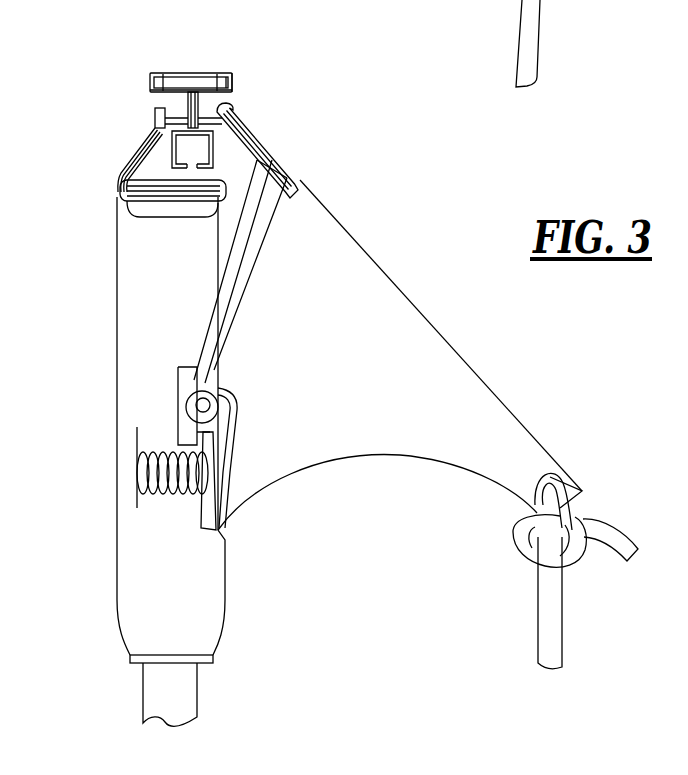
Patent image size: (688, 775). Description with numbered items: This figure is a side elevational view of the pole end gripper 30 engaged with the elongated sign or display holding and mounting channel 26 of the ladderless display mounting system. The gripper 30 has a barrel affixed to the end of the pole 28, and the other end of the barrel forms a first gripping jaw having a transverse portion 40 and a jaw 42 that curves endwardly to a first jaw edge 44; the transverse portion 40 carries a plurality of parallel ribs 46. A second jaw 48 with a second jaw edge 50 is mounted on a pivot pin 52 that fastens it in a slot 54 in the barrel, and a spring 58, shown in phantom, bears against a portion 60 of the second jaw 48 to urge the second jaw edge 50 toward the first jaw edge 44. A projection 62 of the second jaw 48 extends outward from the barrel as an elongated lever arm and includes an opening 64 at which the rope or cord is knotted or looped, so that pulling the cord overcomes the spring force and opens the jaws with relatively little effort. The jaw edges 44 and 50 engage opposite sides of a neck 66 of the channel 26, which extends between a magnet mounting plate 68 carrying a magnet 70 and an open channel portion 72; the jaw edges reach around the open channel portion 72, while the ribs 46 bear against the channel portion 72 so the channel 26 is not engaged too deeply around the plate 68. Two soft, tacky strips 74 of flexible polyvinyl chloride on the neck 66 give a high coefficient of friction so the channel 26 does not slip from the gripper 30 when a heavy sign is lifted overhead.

The sign or display holding and mounting channel 26 is at (150, 75).
The pole 28 is at (160, 690).
The pole end gripper 30 is at (128, 310).
The transverse portion 40 is at (117, 192).
The jaw 42 is at (120, 147).
The first jaw edge 44 is at (155, 109).
The parallel ribs 46 is at (215, 185).
The second jaw 48 is at (258, 160).
The second jaw edge 50 is at (222, 108).
The pivot pin 52 is at (178, 397).
The slot 54 is at (222, 537).
The spring 58 is at (137, 480).
The portion of the second jaw 60 is at (227, 472).
The projection 62 is at (485, 408).
The opening 64 is at (570, 474).
The neck 66 is at (230, 127).
The magnet mounting plate 68 is at (232, 93).
The magnet 70 is at (232, 73).
The open channel portion 72 is at (120, 188).
The strips 74 is at (215, 88).